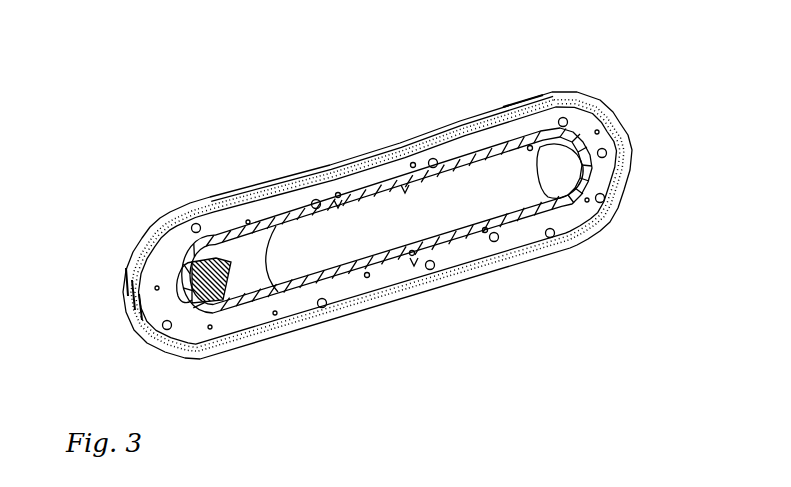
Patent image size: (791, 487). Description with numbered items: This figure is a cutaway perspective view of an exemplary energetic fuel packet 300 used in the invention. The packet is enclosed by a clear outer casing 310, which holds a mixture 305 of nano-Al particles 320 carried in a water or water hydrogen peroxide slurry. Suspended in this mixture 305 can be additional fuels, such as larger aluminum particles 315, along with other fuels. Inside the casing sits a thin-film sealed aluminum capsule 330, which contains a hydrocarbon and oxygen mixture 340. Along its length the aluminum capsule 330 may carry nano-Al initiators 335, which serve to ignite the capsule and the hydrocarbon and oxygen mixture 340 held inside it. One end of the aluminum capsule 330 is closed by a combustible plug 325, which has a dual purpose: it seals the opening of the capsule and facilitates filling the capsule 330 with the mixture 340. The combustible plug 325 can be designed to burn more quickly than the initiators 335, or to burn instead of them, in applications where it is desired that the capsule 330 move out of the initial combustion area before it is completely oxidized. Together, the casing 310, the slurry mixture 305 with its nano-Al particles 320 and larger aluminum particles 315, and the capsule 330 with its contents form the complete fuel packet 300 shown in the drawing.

The capture assembly 300 is at (266, 101).
The mixture 305 is at (226, 330).
The clear outer casing 310 is at (374, 310).
The larger aluminum particles 315 is at (195, 223).
The nano-Al particles 320 is at (599, 130).
The combustible plug 325 is at (193, 283).
The aluminum capsule 330 is at (524, 228).
The nano-Al initiators 335 is at (405, 192).
The hydrocarbon and oxygen mixture 340 is at (497, 183).